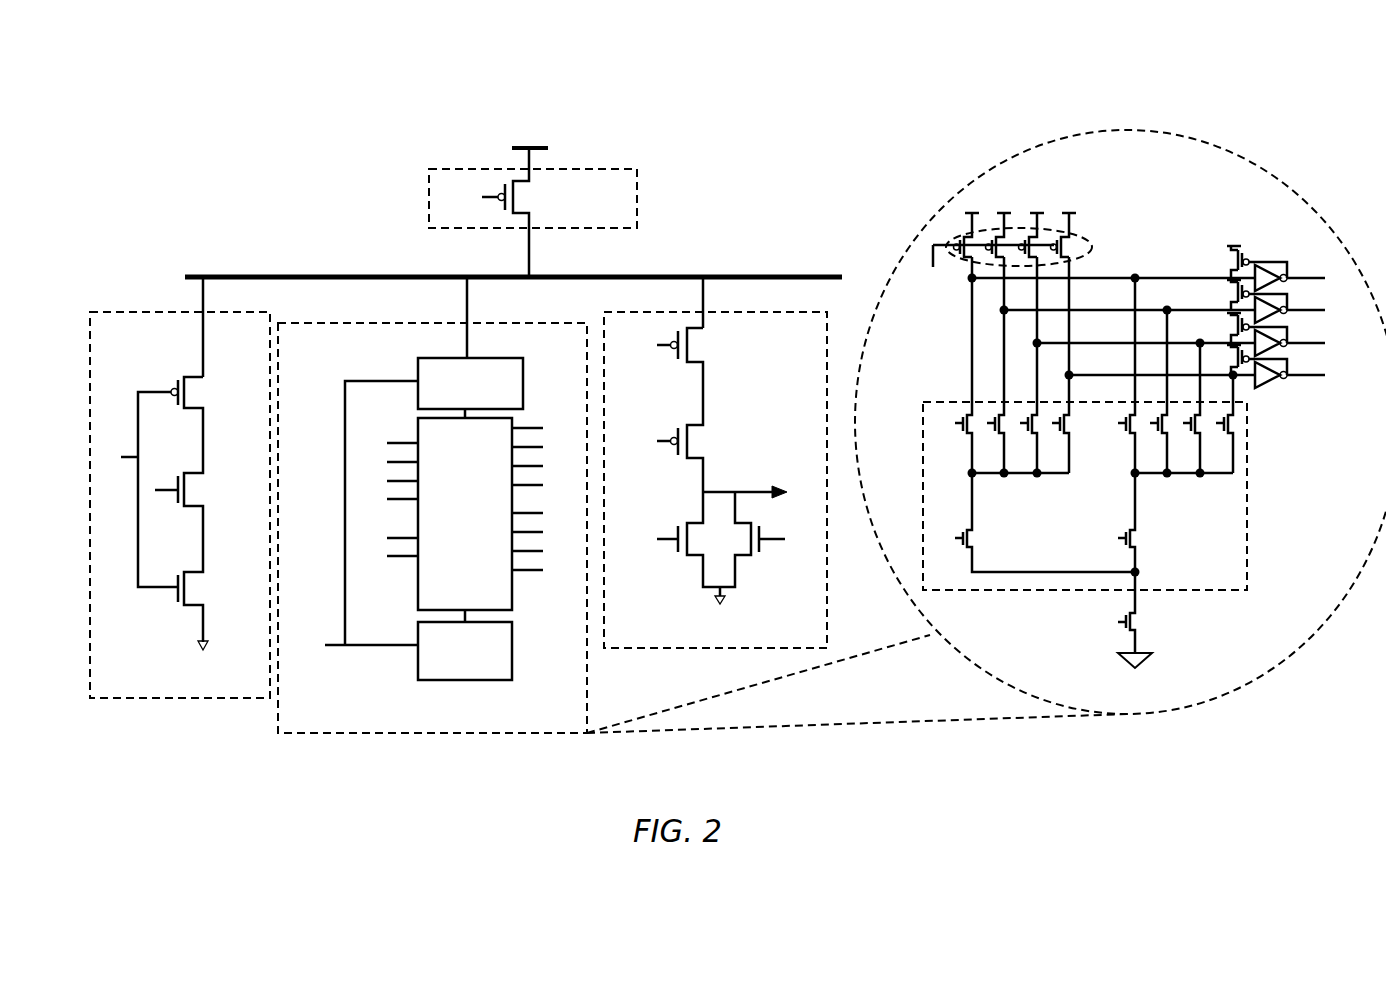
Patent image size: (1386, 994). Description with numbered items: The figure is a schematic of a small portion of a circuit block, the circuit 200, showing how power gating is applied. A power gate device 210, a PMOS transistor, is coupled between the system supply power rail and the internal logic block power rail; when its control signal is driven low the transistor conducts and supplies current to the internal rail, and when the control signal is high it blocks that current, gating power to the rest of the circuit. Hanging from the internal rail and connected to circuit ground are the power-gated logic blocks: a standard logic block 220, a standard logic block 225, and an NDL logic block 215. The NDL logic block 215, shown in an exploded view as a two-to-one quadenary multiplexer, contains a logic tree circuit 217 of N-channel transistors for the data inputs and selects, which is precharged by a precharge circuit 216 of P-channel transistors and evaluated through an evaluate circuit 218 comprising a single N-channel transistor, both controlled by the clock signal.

The circuit 200 is at (230, 124).
The power gate device 210 is at (637, 196).
The NDL logic block 215 is at (1212, 118).
The precharge circuit 216 is at (1135, 218).
The logic tree circuit 217 is at (1273, 572).
The evaluate circuit 218 is at (1185, 635).
The standard logic block 220 is at (180, 505).
The standard logic block 225 is at (715, 480).